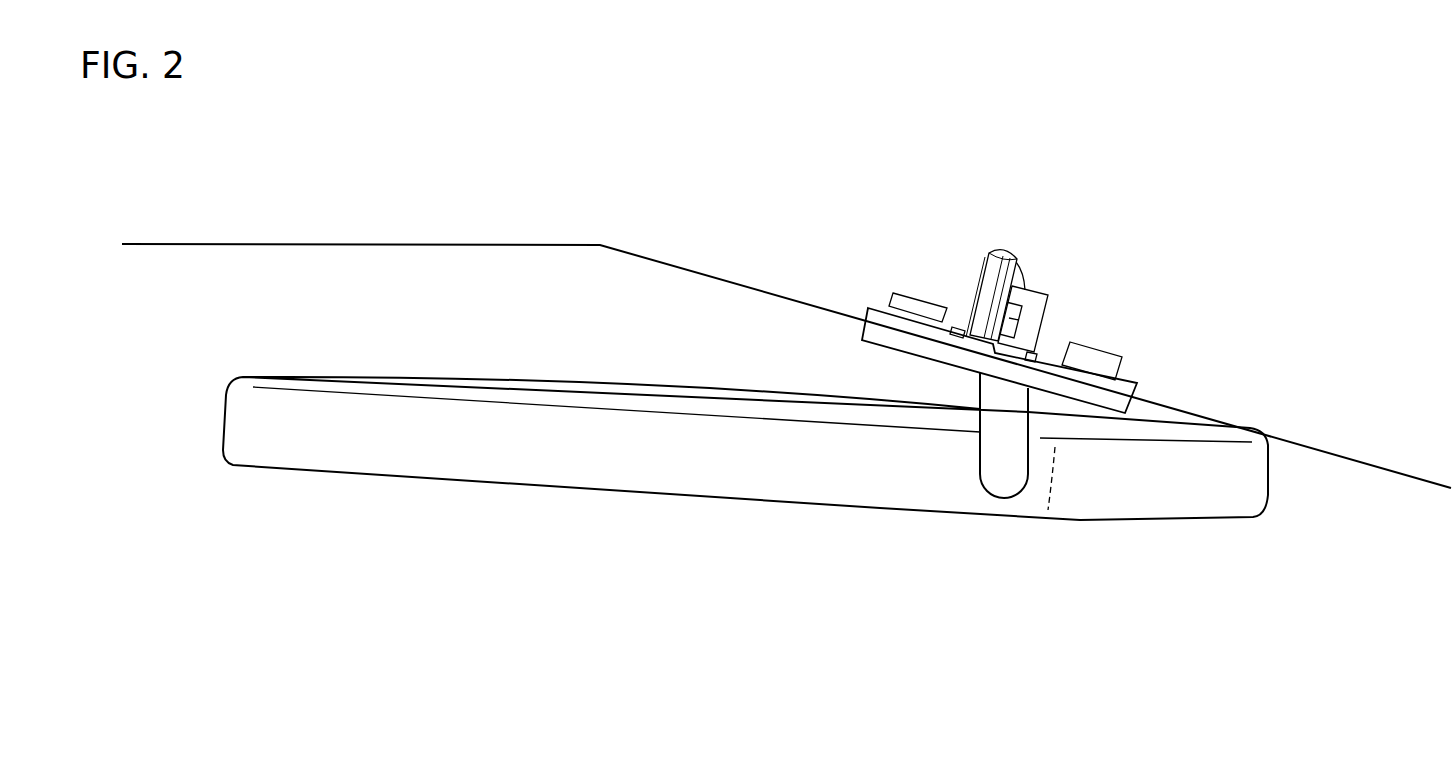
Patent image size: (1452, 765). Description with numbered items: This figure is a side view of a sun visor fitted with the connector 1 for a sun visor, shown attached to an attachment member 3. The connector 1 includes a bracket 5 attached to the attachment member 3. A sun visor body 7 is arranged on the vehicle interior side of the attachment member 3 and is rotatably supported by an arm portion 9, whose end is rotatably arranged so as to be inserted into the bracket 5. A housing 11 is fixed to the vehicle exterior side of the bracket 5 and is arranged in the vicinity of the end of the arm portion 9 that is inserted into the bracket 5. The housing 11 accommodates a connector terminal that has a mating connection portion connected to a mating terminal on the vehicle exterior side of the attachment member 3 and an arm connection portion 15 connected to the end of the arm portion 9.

The connector for a sun visor 1 is at (1069, 226).
The attachment member 3 is at (527, 244).
The bracket 5 is at (916, 294).
The sun visor body 7 is at (633, 491).
The arm portion 9 is at (977, 465).
The housing 11 is at (1002, 243).
The arm connection portion 15 is at (758, 598).